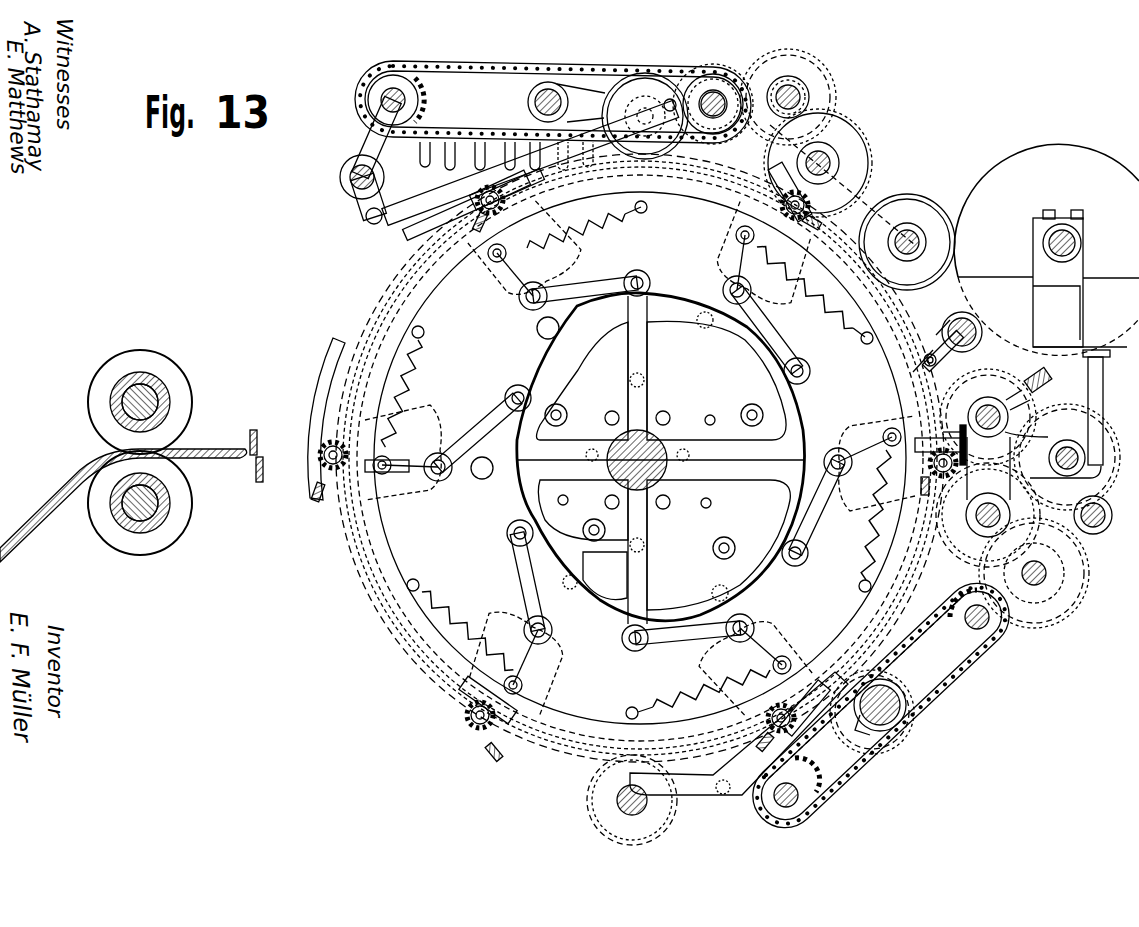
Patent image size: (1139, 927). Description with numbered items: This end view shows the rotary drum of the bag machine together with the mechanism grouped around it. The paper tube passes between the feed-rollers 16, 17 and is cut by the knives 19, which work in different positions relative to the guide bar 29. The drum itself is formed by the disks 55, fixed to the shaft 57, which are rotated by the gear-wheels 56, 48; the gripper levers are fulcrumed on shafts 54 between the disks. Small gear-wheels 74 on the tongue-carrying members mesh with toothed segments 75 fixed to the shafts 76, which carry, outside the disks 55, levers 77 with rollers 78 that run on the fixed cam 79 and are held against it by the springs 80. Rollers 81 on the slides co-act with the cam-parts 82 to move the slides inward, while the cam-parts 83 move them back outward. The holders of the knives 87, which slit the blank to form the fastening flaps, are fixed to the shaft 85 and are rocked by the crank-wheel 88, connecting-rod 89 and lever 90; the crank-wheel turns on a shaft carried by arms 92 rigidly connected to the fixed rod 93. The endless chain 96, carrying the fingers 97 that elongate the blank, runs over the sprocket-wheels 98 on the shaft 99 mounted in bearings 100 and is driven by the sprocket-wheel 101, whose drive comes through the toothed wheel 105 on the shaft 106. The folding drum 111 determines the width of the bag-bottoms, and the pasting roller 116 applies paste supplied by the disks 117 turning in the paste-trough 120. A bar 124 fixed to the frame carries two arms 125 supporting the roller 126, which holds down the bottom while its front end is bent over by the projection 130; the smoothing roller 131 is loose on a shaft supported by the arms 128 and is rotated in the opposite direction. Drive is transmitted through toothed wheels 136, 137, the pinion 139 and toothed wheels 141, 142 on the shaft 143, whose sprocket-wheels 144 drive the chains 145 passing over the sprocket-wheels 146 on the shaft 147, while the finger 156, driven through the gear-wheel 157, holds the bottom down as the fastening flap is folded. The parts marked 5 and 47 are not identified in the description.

The frame ring 5 is at (640, 458).
The feed-roller 16 is at (140, 402).
The feed-roller 17 is at (140, 503).
The knives 19 is at (260, 446).
The guide bar 29 is at (123, 495).
The pivot pin 47 is at (641, 807).
The gear-wheel 48 is at (632, 800).
The shafts 54 is at (515, 398).
The disks 55 is at (640, 458).
The gear 56 is at (640, 458).
The shaft 57 is at (637, 460).
The small gear-wheels 74 is at (322, 455).
The toothed segments 75 is at (634, 457).
The shafts 76 is at (528, 305).
The levers 77 is at (638, 462).
The rollers 78 is at (667, 466).
The fixed cam 79 is at (661, 458).
The springs 80 is at (641, 460).
The rollers 81 is at (615, 493).
The cam-parts 82 is at (327, 410).
The cam-parts 83 is at (739, 734).
The shaft 85 is at (340, 179).
The knives 87 is at (474, 206).
The crank-wheel 88 is at (645, 116).
The connecting-rod 89 is at (530, 162).
The lever 90 is at (366, 208).
The arms 92 is at (581, 103).
The fixed rod 93 is at (540, 102).
The endless chain 96 is at (553, 93).
The fingers 97 is at (506, 158).
The sprocket-wheels 98 is at (436, 100).
The shaft 99 is at (384, 203).
The bearings 100 is at (376, 137).
The sprocket-wheel 101 is at (713, 98).
The toothed wheel 105 is at (788, 89).
The shaft 106 is at (802, 100).
The folding drum 111 is at (839, 177).
The pasting roller 116 is at (907, 242).
The disks 117 is at (1046, 249).
The paste-trough 120 is at (1080, 378).
The bar 124 is at (979, 335).
The arms 125 is at (946, 357).
The roller 126 is at (935, 338).
The arms 128 is at (1027, 479).
The projection 130 is at (1047, 388).
The smoothing roller 131 is at (988, 417).
The toothed wheel 136 is at (1076, 457).
The toothed wheel 137 is at (988, 515).
The pinion 139 is at (1050, 573).
The toothed wheel 141 is at (1047, 573).
The toothed wheel 142 is at (896, 705).
The shaft 143 is at (904, 688).
The sprocket-wheels 144 is at (950, 627).
The chains 145 is at (982, 628).
The sprocket-wheels 146 is at (820, 775).
The shaft 147 is at (795, 800).
The finger 156 is at (872, 727).
The gear-wheel 157 is at (903, 718).